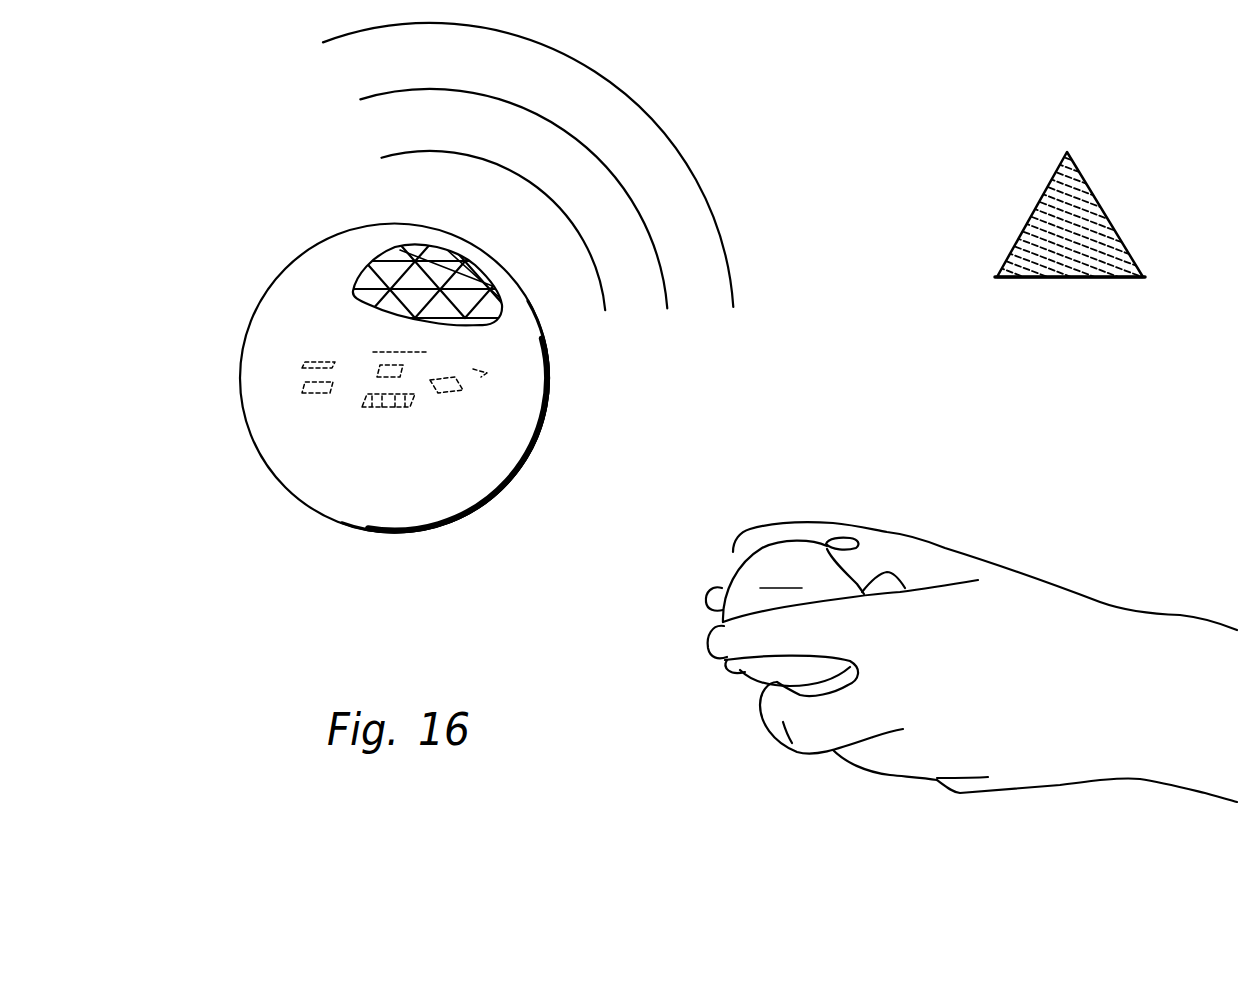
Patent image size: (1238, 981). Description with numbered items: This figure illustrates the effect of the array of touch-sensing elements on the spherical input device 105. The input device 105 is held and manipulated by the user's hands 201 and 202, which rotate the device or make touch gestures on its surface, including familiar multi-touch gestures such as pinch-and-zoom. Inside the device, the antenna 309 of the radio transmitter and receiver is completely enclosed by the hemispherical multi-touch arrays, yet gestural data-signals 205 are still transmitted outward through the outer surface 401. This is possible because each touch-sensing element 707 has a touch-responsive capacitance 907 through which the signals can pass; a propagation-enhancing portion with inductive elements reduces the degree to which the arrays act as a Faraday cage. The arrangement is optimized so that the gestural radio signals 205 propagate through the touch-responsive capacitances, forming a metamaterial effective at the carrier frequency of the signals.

The input device 105 is at (520, 427).
The outer surface 401 is at (250, 437).
The touch-sensing element 707 is at (460, 290).
The touch-responsive capacitance 907 is at (1072, 237).
The antenna 309 is at (400, 407).
The gestural data-signals 205 is at (717, 212).
The user's hand 202 is at (843, 532).
The user's hand 201 is at (912, 758).